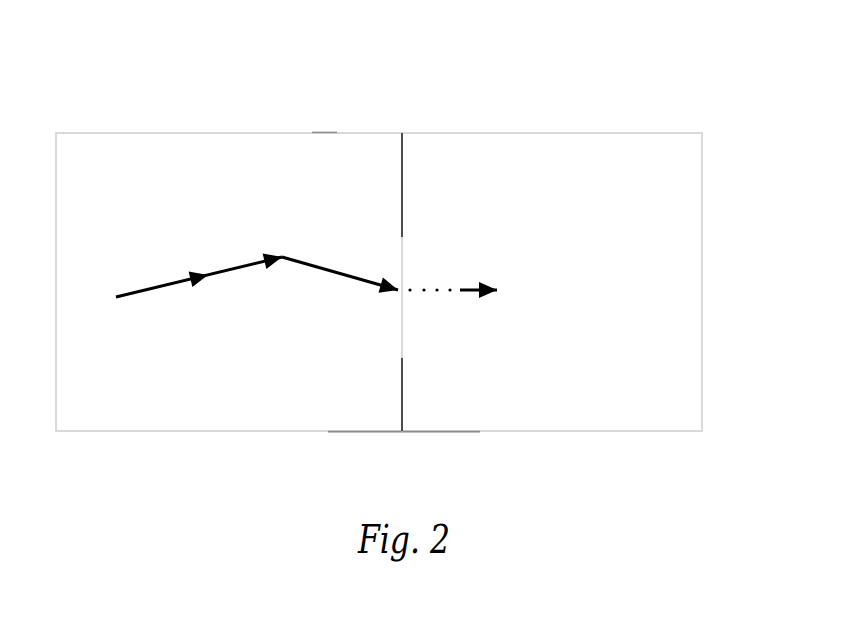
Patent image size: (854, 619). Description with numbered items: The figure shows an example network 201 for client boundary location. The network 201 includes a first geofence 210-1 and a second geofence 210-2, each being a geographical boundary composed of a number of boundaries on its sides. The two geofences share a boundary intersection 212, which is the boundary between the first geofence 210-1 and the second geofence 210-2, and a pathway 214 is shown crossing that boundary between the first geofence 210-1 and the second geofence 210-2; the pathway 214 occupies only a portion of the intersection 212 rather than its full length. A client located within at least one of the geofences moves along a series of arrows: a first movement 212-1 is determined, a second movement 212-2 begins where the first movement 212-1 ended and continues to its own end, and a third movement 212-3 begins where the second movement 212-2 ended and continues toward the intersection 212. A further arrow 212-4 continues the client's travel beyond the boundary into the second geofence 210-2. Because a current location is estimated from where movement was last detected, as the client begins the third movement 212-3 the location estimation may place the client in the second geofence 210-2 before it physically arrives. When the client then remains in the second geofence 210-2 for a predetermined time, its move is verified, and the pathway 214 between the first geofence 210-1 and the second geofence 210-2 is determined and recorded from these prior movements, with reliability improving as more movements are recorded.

The network 201 is at (529, 60).
The first geofence 210-1 is at (90, 155).
The second geofence 210-2 is at (648, 148).
The boundary intersection 212 is at (402, 380).
The first movement 212-1 is at (143, 290).
The second movement 212-2 is at (226, 272).
The third movement 212-3 is at (320, 268).
The fourth path segment 212-4 is at (433, 290).
The pathway 214 is at (405, 318).